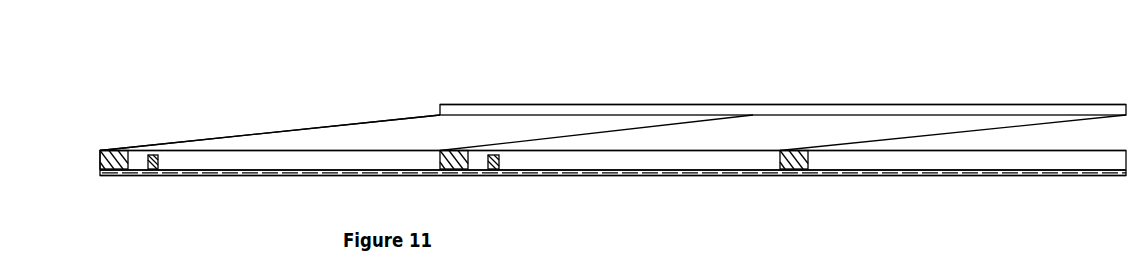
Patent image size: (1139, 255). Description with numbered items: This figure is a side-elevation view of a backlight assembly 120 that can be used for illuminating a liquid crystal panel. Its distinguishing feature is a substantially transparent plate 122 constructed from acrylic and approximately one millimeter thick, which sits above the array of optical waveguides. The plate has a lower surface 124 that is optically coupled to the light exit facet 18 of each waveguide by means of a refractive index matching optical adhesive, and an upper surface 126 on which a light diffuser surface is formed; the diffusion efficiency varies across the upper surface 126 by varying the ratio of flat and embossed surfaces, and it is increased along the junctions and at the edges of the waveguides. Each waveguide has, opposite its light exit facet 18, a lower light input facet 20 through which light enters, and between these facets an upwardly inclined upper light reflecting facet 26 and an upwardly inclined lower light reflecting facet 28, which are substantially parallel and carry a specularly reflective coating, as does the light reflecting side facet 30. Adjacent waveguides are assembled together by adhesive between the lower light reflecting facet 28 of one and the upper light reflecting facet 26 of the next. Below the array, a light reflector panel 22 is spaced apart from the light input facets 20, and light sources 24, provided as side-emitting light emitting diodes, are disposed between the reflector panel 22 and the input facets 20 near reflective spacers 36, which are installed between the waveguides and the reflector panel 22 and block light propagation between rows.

The backlight assembly 120 is at (430, 71).
The substantially transparent plate 122 is at (1070, 110).
The lower surface 124 is at (557, 170).
The upper surface 126 is at (1008, 165).
The light reflecting side facet 30 is at (365, 133).
The upper light reflecting facet 26 is at (258, 132).
The light exit facet 18 is at (557, 165).
The light input facet 20 is at (268, 152).
The light reflector panel 22 is at (878, 175).
The lower light reflecting facet 28 is at (1008, 165).
The spacer 36 is at (108, 170).
The light source 24 is at (155, 170).